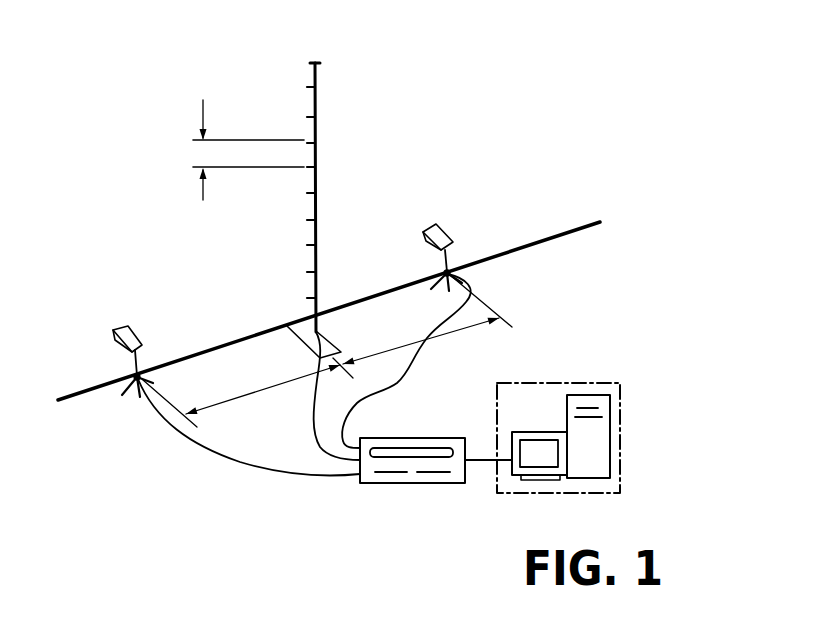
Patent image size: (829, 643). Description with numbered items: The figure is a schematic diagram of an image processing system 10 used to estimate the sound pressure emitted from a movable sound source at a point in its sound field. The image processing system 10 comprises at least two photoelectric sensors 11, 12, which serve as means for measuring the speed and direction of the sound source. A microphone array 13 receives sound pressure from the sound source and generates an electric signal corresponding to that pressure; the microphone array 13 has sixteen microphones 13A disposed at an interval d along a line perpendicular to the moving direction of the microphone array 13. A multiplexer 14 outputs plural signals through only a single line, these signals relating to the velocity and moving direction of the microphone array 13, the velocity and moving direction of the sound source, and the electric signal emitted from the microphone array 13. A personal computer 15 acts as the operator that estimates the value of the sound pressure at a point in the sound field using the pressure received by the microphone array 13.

The image processing system 10 is at (475, 147).
The photoelectric sensor 11 is at (236, 377).
The photoelectric sensor 12 is at (451, 228).
The microphone array 13 is at (320, 150).
The microphone 13A is at (312, 71).
The multiplexer 14 is at (433, 437).
The personal computer 15 is at (558, 382).
The interval d is at (248, 166).